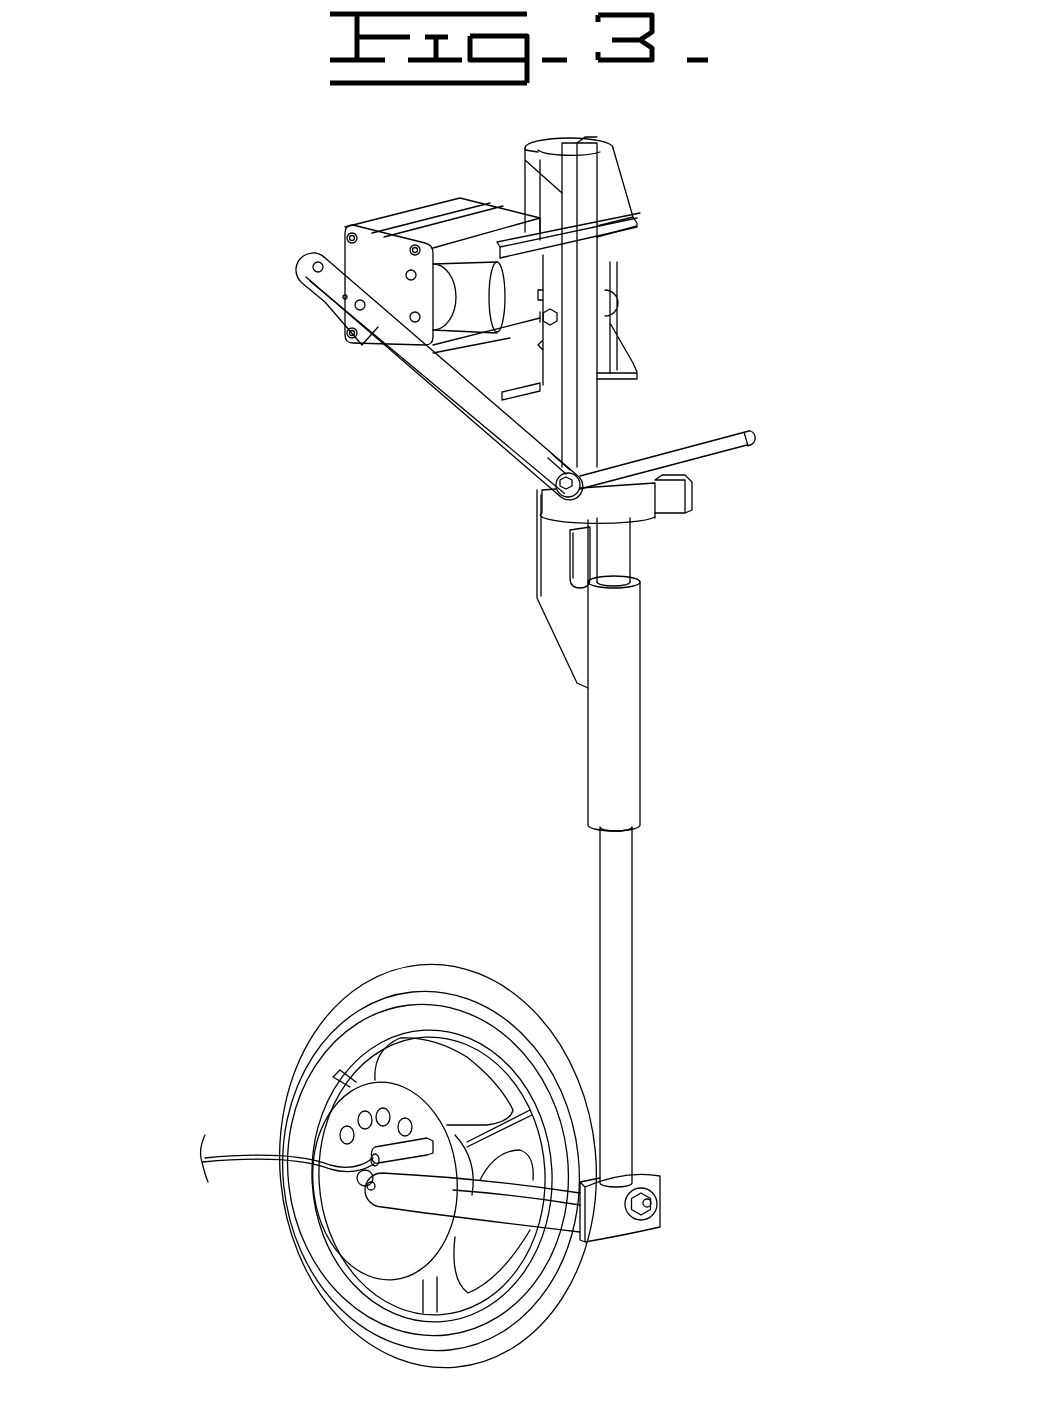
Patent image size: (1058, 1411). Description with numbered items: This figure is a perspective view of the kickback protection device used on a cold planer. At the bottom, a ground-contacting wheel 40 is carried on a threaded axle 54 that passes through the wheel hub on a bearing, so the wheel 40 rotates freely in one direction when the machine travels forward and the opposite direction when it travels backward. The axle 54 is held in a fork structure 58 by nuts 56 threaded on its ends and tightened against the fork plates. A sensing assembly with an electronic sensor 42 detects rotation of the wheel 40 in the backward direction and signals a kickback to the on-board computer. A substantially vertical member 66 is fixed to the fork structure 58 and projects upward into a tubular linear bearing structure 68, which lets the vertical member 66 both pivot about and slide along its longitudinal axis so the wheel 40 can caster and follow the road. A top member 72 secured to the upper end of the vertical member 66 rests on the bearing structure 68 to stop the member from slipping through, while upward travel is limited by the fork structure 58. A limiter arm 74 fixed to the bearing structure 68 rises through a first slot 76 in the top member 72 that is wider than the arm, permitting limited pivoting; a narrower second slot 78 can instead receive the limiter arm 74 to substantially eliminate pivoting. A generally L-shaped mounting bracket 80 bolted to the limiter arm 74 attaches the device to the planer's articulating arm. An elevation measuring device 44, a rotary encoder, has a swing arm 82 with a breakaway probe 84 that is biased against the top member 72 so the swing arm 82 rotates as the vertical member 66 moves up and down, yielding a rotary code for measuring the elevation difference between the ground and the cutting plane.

The wheel 40 is at (288, 1045).
The electronic sensor 42 is at (372, 1168).
The elevation measuring device 44 is at (368, 211).
The threaded axle 54 is at (365, 1180).
The nuts 56 is at (387, 1188).
The fork structure 58 is at (650, 1158).
The substantially vertical member 66 is at (640, 572).
The tubular linear bearing structure 68 is at (643, 700).
The top member 72 is at (695, 469).
The limiter arm 74 is at (552, 570).
The first slot 76 is at (603, 463).
The second slot 78 is at (675, 500).
The mounting bracket 80 is at (633, 178).
The swing arm 82 is at (399, 368).
The breakaway probe or wand 84 is at (762, 438).